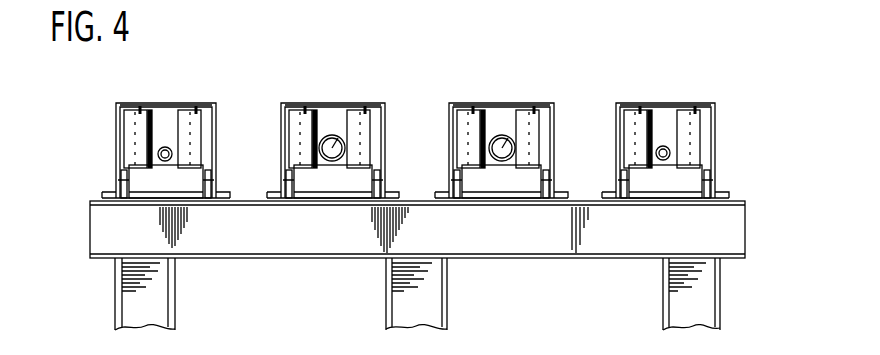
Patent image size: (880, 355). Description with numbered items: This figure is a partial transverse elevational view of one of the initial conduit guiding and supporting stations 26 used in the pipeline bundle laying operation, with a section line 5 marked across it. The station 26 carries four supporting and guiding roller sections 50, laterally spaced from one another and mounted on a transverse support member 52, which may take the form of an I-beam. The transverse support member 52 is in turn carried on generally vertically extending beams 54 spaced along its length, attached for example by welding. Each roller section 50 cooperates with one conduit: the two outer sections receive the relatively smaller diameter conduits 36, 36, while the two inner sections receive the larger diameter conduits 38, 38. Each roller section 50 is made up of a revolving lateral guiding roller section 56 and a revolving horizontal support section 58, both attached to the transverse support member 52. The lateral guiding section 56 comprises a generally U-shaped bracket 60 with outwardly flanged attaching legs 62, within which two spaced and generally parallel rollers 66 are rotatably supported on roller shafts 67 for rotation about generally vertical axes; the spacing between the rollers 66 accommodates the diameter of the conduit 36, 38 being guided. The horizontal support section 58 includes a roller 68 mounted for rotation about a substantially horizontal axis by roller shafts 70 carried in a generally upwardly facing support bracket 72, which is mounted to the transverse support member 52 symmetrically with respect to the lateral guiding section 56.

The section line 5- 5 is at (332, 53).
The initial guiding and supporting station 26 is at (431, 70).
The conduit 36 is at (156, 154).
The conduit 38 is at (417, 138).
The supporting and guiding roller section 50 is at (280, 92).
The transverse support member 52 is at (488, 230).
The vertically extending beam 54 is at (137, 307).
The lateral guiding roller section 56 is at (178, 102).
The horizontal support section 58 is at (202, 160).
The U-shaped bracket 60 is at (281, 100).
The outwardly flanged attaching leg 62 is at (99, 199).
The roller 66 is at (146, 148).
The roller shaft 67 is at (143, 110).
The roller 68 is at (177, 185).
The roller shaft 70 is at (126, 183).
The support bracket 72 is at (205, 197).